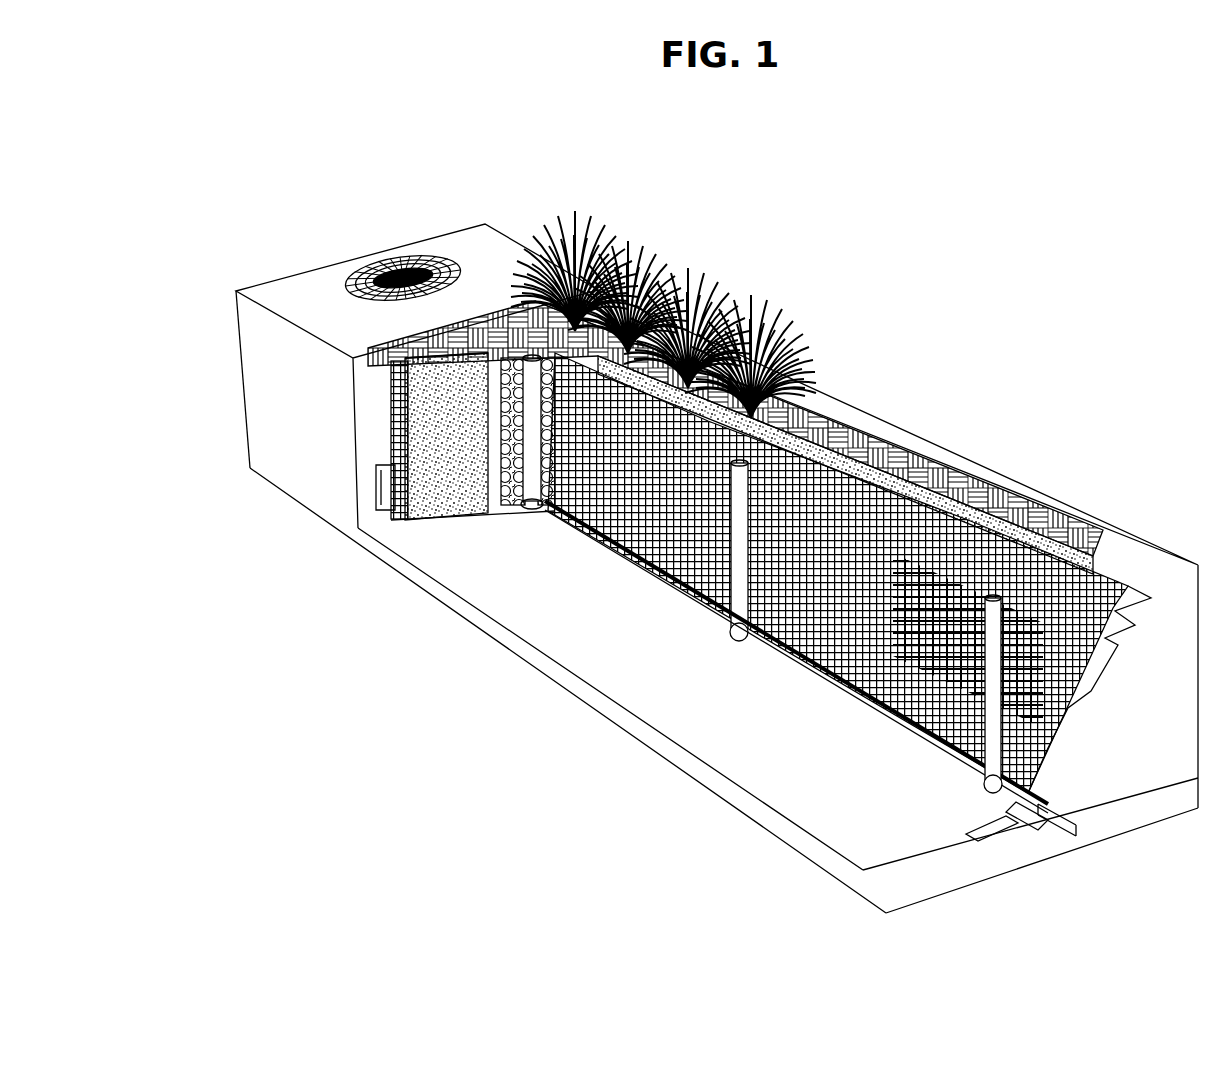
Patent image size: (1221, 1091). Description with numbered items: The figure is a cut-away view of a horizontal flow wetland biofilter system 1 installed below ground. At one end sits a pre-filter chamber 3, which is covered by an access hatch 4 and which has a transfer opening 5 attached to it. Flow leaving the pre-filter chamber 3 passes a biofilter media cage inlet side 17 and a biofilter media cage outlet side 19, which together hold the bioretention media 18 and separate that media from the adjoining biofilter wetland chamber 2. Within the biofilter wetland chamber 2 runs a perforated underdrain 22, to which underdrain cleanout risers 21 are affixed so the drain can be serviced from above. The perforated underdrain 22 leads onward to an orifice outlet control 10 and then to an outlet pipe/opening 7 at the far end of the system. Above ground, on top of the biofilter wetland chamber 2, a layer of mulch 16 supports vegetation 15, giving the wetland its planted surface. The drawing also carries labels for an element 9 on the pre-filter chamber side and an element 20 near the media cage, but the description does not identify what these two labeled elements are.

The wetland biofilter system 1 is at (885, 913).
The biofilter wetland chamber 2 is at (1195, 540).
The pre-filter chamber 3 is at (467, 203).
The access hatch 4 is at (440, 259).
The transfer opening 5 is at (380, 483).
The outlet pipe/opening 7 is at (1055, 820).
The chamber wall 9 is at (245, 309).
The orifice outlet control 10 is at (1036, 805).
The vegetation 15 is at (578, 218).
The mulch 16 is at (800, 401).
The biofilter media cage inlet side 17 is at (396, 506).
The bioretention media 18 is at (443, 490).
The biofilter media cage outlet side 19 is at (496, 482).
The vertical pipe 20 is at (497, 376).
The underdrain cleanout risers 21 is at (984, 585).
The perforated underdrain 22 is at (855, 700).